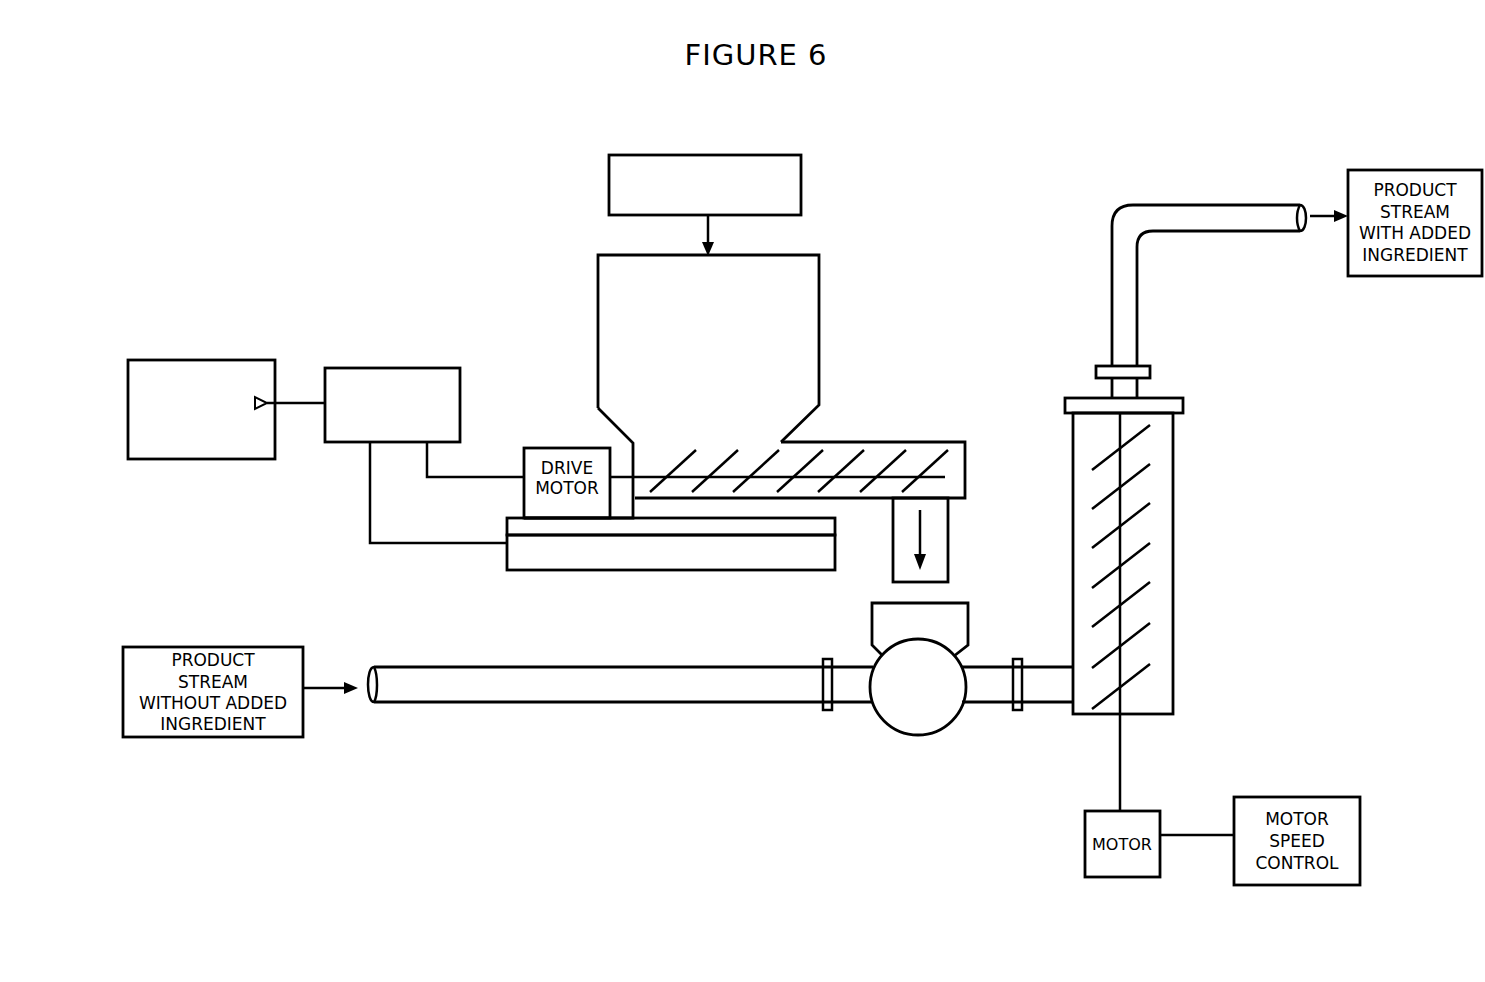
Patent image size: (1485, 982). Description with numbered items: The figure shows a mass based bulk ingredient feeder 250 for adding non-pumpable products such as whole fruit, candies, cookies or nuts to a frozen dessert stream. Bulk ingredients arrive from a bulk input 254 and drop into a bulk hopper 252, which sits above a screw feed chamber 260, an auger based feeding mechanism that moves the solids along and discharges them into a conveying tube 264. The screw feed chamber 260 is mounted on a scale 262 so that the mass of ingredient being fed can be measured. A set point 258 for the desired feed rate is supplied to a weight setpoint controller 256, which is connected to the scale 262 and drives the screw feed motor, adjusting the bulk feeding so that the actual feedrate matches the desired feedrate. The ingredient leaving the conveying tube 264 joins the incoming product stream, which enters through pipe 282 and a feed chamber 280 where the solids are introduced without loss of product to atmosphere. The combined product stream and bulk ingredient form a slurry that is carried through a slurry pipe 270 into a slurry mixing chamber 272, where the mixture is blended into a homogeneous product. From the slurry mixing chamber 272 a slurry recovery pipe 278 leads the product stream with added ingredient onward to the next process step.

The bulk ingredient feeder 250 is at (443, 286).
The bulk hopper 252 is at (598, 266).
The bulk input 254 is at (608, 165).
The weight setpoint controller 256 is at (360, 368).
The set point 258 is at (216, 360).
The screw feed chamber 260 is at (873, 462).
The scale 262 is at (614, 560).
The conveying tube 264 is at (950, 562).
The slurry pipe 270 is at (1047, 703).
The slurry mixing chamber 272 is at (1157, 597).
The slurry recovery pipe 278 is at (1138, 323).
The feed chamber 280 is at (884, 722).
The product stream pipe 282 is at (640, 703).